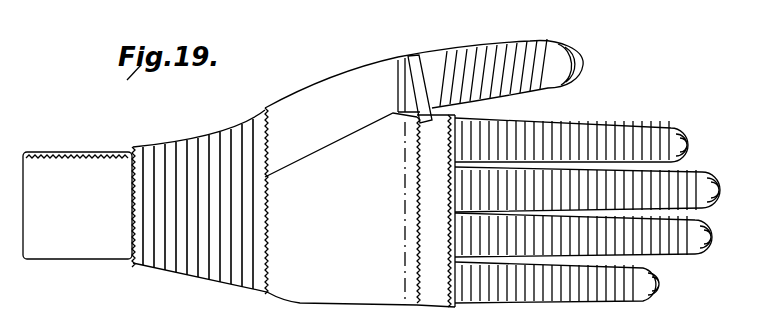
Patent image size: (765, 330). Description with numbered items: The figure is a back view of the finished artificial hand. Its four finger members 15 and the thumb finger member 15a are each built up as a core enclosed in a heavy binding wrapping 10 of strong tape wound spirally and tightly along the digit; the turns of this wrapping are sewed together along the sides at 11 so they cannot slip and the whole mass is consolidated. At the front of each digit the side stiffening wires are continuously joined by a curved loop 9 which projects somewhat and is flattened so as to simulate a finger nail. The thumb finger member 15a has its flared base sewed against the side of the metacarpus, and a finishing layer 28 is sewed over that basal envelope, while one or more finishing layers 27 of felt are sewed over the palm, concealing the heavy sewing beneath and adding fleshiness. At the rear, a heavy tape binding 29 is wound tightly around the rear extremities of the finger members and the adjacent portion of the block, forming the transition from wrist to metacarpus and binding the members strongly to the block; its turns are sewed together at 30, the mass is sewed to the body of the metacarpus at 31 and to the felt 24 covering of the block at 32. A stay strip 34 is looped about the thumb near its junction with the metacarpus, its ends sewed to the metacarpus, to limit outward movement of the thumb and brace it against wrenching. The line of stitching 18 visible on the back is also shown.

The curved loop 9 is at (584, 60).
The binding wrapping 10 is at (518, 63).
The side sewing 11 is at (552, 89).
The finger member 15 is at (575, 115).
The thumb finger member 15a is at (472, 47).
The line of stitching 18 is at (387, 113).
The felt 24 is at (58, 256).
The finishing layer 27 is at (394, 182).
The finishing layer 28 is at (342, 76).
The tape binding 29 is at (202, 250).
The sewing of binding turns 30 is at (190, 137).
The sewing to metacarpus 31 is at (268, 226).
The sewing to block covering 32 is at (129, 215).
The stay strip 34 is at (413, 53).